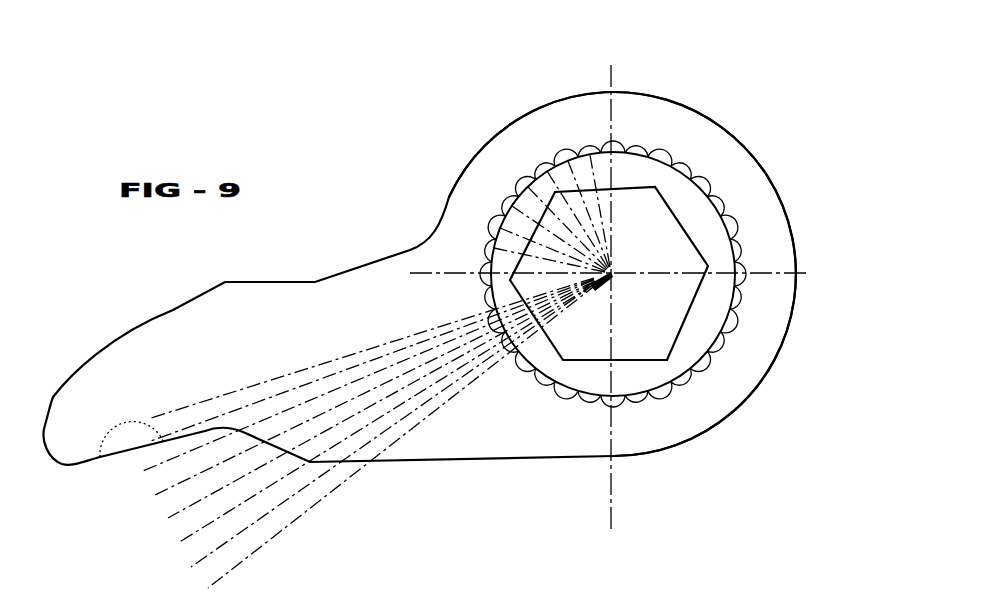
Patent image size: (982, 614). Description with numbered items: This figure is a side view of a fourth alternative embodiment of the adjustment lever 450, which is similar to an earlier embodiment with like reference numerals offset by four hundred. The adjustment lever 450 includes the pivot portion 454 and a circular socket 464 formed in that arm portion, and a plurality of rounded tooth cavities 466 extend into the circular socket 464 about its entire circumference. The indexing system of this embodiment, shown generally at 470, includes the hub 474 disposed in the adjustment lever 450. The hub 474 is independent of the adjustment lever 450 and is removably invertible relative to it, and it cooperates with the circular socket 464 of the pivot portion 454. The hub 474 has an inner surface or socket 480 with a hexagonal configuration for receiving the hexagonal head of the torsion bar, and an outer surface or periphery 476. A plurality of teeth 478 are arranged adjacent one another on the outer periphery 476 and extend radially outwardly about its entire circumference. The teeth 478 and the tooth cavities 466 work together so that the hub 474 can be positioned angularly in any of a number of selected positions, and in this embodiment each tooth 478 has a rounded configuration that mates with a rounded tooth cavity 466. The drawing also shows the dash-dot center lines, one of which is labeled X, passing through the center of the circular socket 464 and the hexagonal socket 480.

The adjustment lever 450 is at (404, 148).
The pivot portion 454 is at (723, 147).
The circular socket 464 is at (636, 165).
The rounded tooth cavities 466 is at (581, 153).
The indexing system 470 is at (773, 163).
The hub 474 is at (697, 340).
The outer surface or periphery 476 is at (490, 302).
The teeth 478 is at (557, 160).
The inner surface or socket 480 is at (637, 355).
The axis X is at (612, 87).